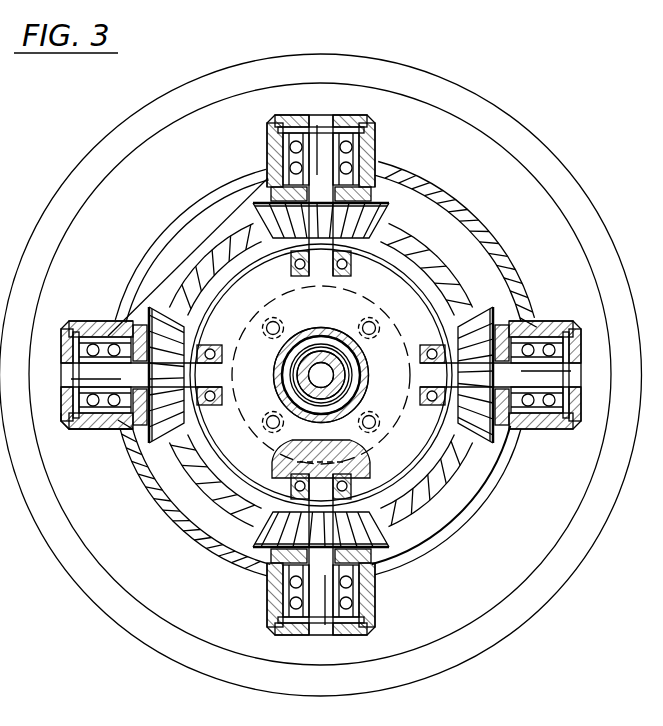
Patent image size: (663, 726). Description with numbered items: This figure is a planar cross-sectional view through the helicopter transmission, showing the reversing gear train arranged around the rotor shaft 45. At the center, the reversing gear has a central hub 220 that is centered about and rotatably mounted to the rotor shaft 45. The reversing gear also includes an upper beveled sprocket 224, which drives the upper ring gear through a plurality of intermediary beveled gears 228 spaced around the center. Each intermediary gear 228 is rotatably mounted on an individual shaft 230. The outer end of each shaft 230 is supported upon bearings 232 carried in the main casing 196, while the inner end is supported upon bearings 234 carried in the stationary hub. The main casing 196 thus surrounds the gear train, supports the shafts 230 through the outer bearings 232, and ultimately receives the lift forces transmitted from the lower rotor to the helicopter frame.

The rotor shaft 45 is at (325, 353).
The main casing 196 is at (197, 536).
The central hub 220 is at (320, 470).
The upper beveled sprocket 224 is at (421, 257).
The intermediary beveled gears 228 is at (183, 287).
The shafts 230 is at (118, 432).
The bearings 232 is at (102, 322).
The bearings 234 is at (423, 332).